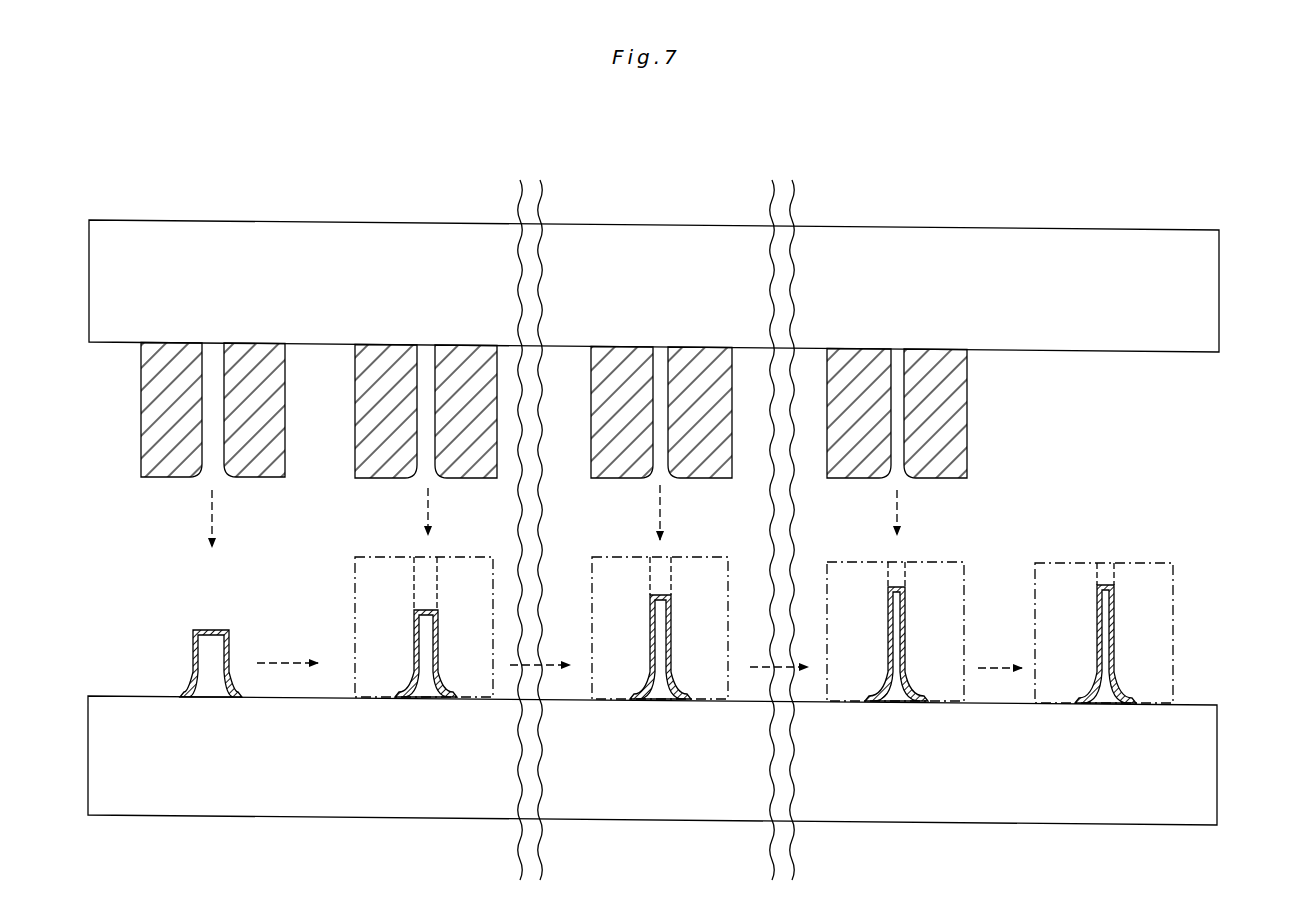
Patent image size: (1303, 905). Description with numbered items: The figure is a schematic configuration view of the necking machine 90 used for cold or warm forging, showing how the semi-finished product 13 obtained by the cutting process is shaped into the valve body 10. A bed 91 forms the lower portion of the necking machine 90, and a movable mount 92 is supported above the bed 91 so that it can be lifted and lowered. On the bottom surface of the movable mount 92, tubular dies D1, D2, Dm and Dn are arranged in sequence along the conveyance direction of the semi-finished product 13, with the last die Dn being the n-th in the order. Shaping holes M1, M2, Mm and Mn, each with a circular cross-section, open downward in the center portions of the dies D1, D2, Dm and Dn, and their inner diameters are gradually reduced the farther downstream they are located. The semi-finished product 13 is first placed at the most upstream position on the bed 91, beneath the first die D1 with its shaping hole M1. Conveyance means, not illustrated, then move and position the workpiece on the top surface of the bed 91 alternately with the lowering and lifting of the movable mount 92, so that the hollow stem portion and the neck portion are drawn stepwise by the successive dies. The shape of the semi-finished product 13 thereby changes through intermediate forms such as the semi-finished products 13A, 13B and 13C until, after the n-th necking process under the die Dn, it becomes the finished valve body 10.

The necking machine 90 is at (1112, 208).
The movable mount 92 is at (1220, 288).
The bed 91 is at (1218, 757).
The semi-finished product 13 is at (193, 675).
The semi-finished product 13A is at (440, 630).
The semi-finished product 13B is at (650, 628).
The semi-finished product 13C is at (888, 615).
The valve body 10 is at (1114, 652).
The first die D1 is at (141, 405).
The second die D2 is at (355, 405).
The m-th die Dm is at (732, 435).
The n-th die Dn is at (967, 432).
The first shaping hole M1 is at (212, 478).
The second shaping hole M2 is at (428, 479).
The m-th shaping hole Mm is at (660, 479).
The n-th shaping hole Mn is at (897, 479).